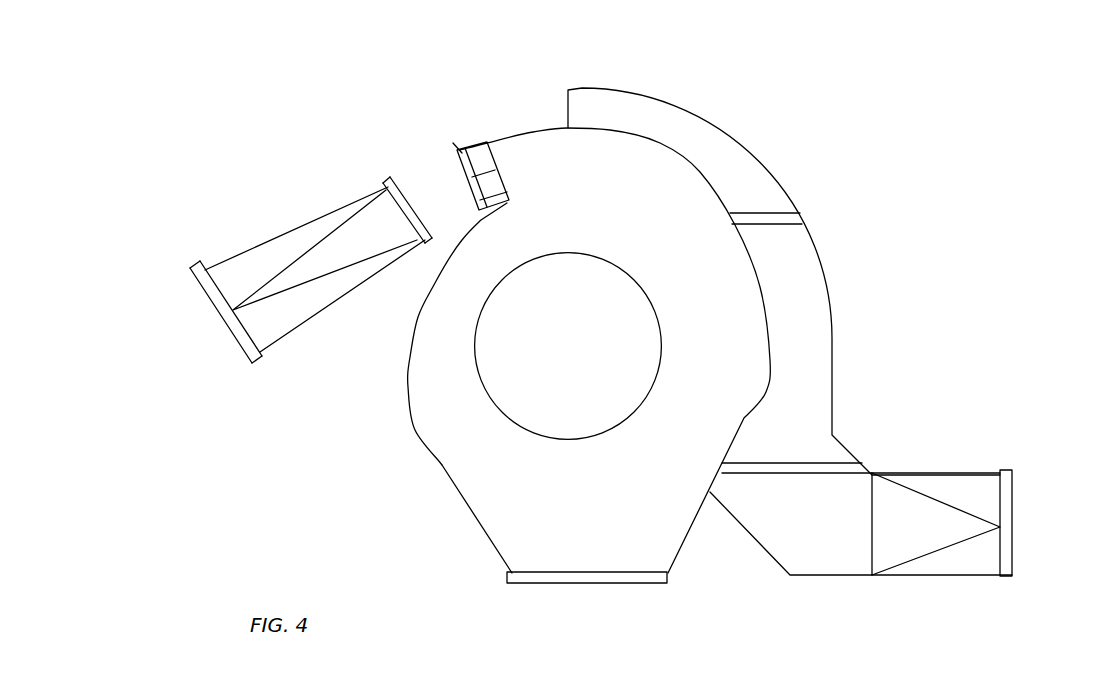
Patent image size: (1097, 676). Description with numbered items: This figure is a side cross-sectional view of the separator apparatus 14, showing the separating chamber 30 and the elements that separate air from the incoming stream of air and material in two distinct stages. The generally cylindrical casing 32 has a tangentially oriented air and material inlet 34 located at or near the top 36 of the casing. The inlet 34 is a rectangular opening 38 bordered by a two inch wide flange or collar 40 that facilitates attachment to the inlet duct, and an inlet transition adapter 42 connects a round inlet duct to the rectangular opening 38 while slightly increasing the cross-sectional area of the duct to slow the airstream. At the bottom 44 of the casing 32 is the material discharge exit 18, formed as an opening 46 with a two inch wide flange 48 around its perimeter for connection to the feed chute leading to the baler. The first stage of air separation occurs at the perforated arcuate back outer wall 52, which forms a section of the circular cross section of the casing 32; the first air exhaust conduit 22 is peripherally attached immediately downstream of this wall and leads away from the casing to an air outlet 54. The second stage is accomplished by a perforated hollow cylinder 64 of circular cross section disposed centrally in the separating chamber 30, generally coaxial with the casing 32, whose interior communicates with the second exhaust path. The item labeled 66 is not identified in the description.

The separator apparatus 14 is at (281, 147).
The material discharge exit 18 is at (550, 578).
The first air exhaust conduit 22 is at (647, 113).
The separating chamber 30 is at (640, 201).
The cylindrical casing 32 is at (440, 468).
The air and material inlet 34 is at (477, 172).
The top of the cylindrical casing 36 is at (533, 127).
The rectangular opening 38 is at (456, 180).
The flange or collar 40 is at (457, 147).
The inlet transition adapter 42 is at (289, 308).
The bottom of the cylindrical casing 44 is at (675, 565).
The opening of the material discharge exit 46 is at (632, 598).
The flange 48 is at (503, 582).
The perforated back outer wall 52 is at (755, 268).
The air outlet 54 is at (1013, 523).
The perforated hollow cylinder 64 is at (628, 420).
The motor 66 is at (1080, 331).